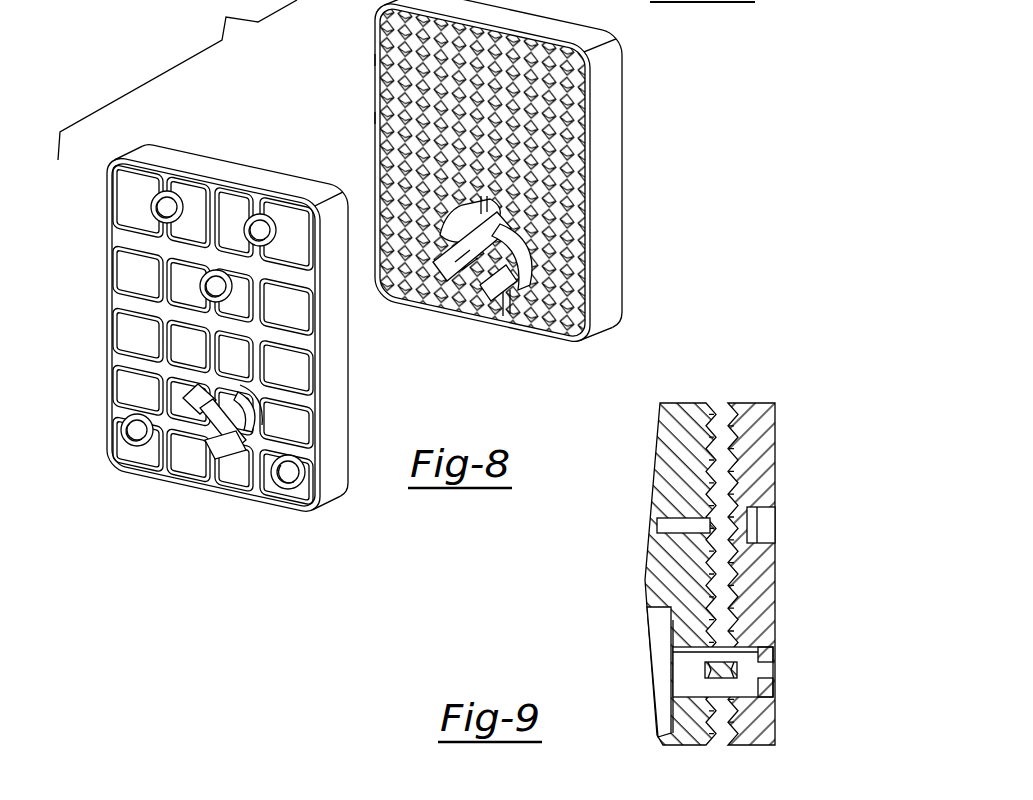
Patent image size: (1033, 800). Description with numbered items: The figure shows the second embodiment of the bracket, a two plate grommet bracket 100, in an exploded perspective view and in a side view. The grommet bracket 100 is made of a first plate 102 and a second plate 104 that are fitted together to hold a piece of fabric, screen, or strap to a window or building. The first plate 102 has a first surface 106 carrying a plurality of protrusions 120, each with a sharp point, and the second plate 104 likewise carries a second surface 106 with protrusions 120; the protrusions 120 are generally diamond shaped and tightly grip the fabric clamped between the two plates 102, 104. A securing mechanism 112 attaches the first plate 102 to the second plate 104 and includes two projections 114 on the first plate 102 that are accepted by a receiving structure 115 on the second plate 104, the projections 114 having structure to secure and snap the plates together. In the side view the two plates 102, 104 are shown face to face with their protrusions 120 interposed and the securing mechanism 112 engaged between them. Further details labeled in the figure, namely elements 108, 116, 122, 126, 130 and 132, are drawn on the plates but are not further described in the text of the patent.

In FIG. 8, the grommet bracket 100 is at (502, 192).
In FIG. 9, the grommet bracket 100 is at (708, 550).
In FIG. 8, the first plate 102 is at (498, 192).
In FIG. 9, the first plate 102 is at (636, 574).
In FIG. 8, the second plate 104 is at (333, 363).
In FIG. 9, the second plate 104 is at (770, 570).
In FIG. 8, the first surface 106 is at (236, 338).
In FIG. 8, the peripheral rim 108 is at (117, 393).
In FIG. 8, the securing mechanism 112 is at (503, 312).
In FIG. 8, the projections 114 is at (596, 348).
In FIG. 8, the receiving structure 115 is at (238, 452).
In FIG. 8, the textured engagement surface 116 is at (377, 119).
In FIG. 8, the protrusions 120 is at (377, 61).
In FIG. 9, the protrusions 120 is at (716, 675).
In FIG. 9, the retention pin 122 is at (770, 655).
In FIG. 9, the flange 126 is at (650, 604).
In FIG. 8, the rib 130 is at (137, 325).
In FIG. 8, the pocket 132 is at (135, 328).